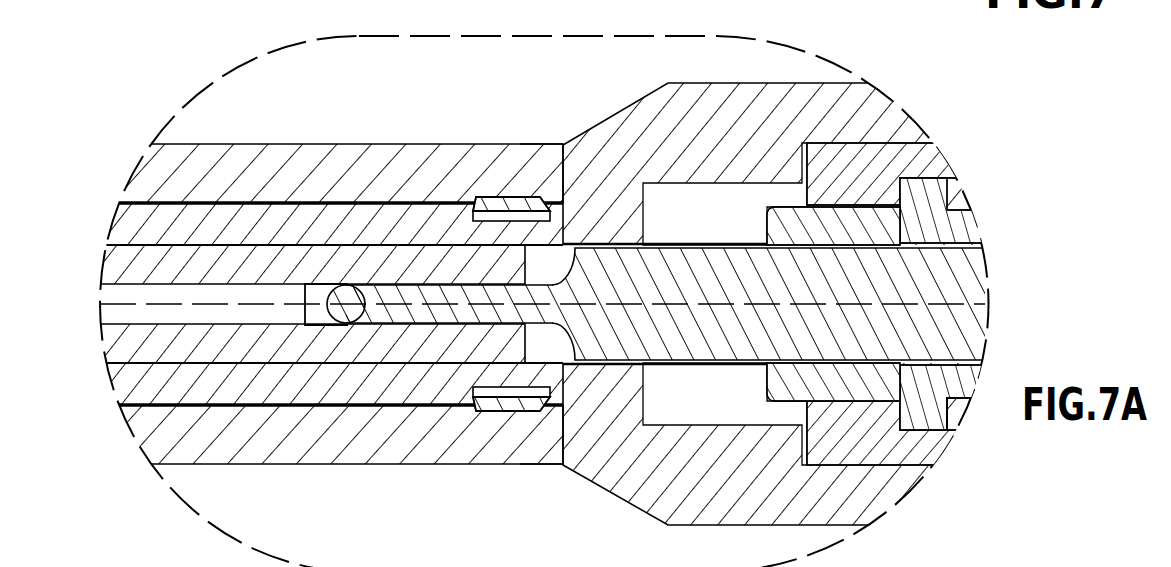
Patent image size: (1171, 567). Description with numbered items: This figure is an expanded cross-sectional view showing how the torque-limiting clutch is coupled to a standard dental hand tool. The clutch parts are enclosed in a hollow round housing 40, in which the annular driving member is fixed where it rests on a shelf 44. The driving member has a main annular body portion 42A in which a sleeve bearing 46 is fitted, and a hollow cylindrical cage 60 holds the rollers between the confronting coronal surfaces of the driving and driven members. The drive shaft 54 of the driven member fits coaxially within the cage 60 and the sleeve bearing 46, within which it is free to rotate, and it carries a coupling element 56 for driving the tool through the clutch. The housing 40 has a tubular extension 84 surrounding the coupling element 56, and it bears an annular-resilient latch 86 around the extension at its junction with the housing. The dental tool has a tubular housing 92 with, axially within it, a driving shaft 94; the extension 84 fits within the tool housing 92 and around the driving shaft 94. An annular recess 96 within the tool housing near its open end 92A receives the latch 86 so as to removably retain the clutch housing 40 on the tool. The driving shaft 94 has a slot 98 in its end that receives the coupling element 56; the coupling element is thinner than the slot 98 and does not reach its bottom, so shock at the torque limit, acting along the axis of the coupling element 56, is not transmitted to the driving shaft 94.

The housing 40 is at (632, 478).
The main annular body portion 42A is at (873, 160).
The shelf 44 is at (807, 148).
The sleeve bearing 46 is at (772, 384).
The drive shaft 54 is at (688, 270).
The coupling element 56 is at (350, 282).
The cage 60 is at (949, 428).
The tubular extension 84 is at (283, 393).
The annular-resilient latch 86 is at (482, 418).
The tubular housing 92 is at (413, 146).
The open end 92A is at (562, 150).
The driving shaft 94 is at (252, 260).
The annular recess 96 is at (483, 200).
The slot 98 is at (322, 284).